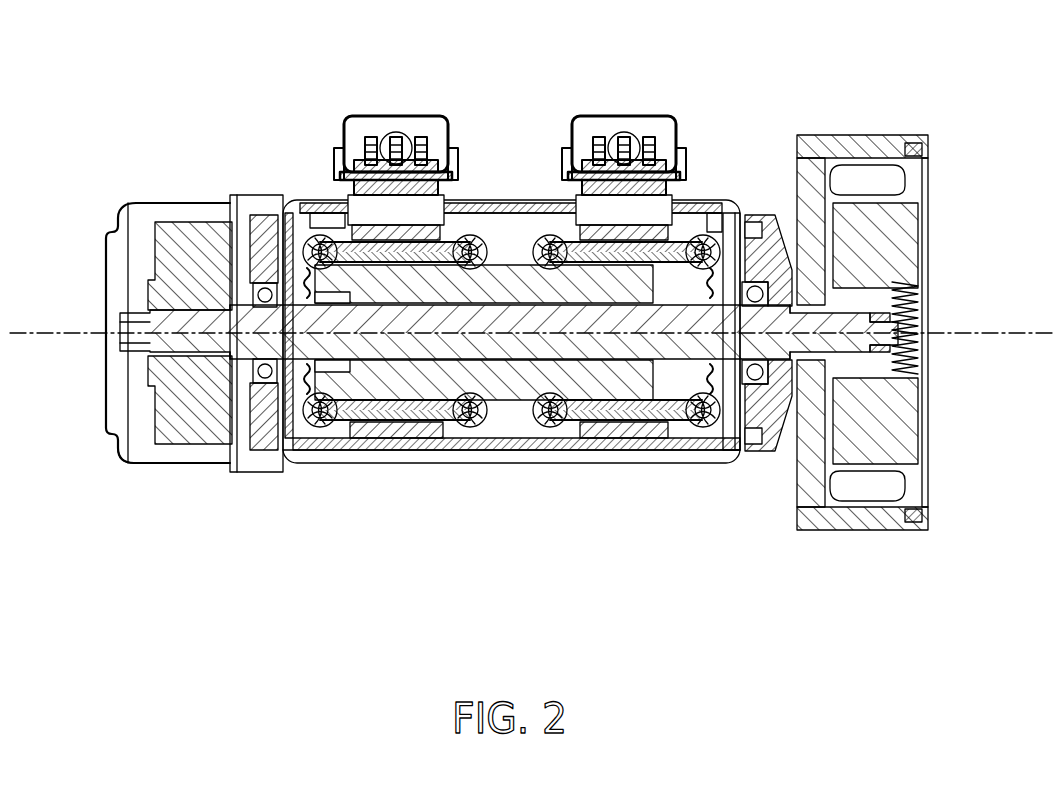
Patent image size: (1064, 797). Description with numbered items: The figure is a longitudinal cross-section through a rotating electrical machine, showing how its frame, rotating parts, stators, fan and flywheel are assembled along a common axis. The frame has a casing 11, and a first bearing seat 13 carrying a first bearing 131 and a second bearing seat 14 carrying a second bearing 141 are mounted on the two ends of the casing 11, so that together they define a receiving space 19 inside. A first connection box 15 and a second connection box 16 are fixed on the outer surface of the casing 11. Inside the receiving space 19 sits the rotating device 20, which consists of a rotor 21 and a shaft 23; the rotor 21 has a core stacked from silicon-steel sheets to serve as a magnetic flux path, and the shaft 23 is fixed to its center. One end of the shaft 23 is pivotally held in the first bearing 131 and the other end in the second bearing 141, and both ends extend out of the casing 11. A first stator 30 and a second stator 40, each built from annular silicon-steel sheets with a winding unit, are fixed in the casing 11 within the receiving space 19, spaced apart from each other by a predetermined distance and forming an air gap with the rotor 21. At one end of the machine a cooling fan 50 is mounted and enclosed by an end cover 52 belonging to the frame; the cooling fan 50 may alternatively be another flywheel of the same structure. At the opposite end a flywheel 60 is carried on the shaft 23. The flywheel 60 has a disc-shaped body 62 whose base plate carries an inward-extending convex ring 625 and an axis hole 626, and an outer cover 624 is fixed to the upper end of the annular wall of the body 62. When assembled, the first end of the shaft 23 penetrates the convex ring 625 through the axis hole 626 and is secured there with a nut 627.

The casing 11 is at (633, 458).
The first bearing seat 13 is at (772, 452).
The first bearing 131 is at (760, 215).
The second bearing seat 14 is at (227, 440).
The second bearing 141 is at (282, 447).
The first connection box 15 is at (450, 118).
The second connection box 16 is at (674, 118).
The receiving space 19 is at (511, 440).
The rotating device 20 is at (327, 63).
The rotor 21 is at (398, 278).
The shaft 23 is at (213, 314).
The first stator 30 is at (409, 440).
The second stator 40 is at (657, 450).
The cooling fan 50 is at (163, 216).
The end cover 52 is at (124, 470).
The flywheel 60 is at (918, 325).
The disc-shaped body 62 is at (862, 541).
The outer cover 624 is at (926, 189).
The convex ring 625 is at (900, 278).
The axis hole 626 is at (833, 295).
The nut 627 is at (882, 378).